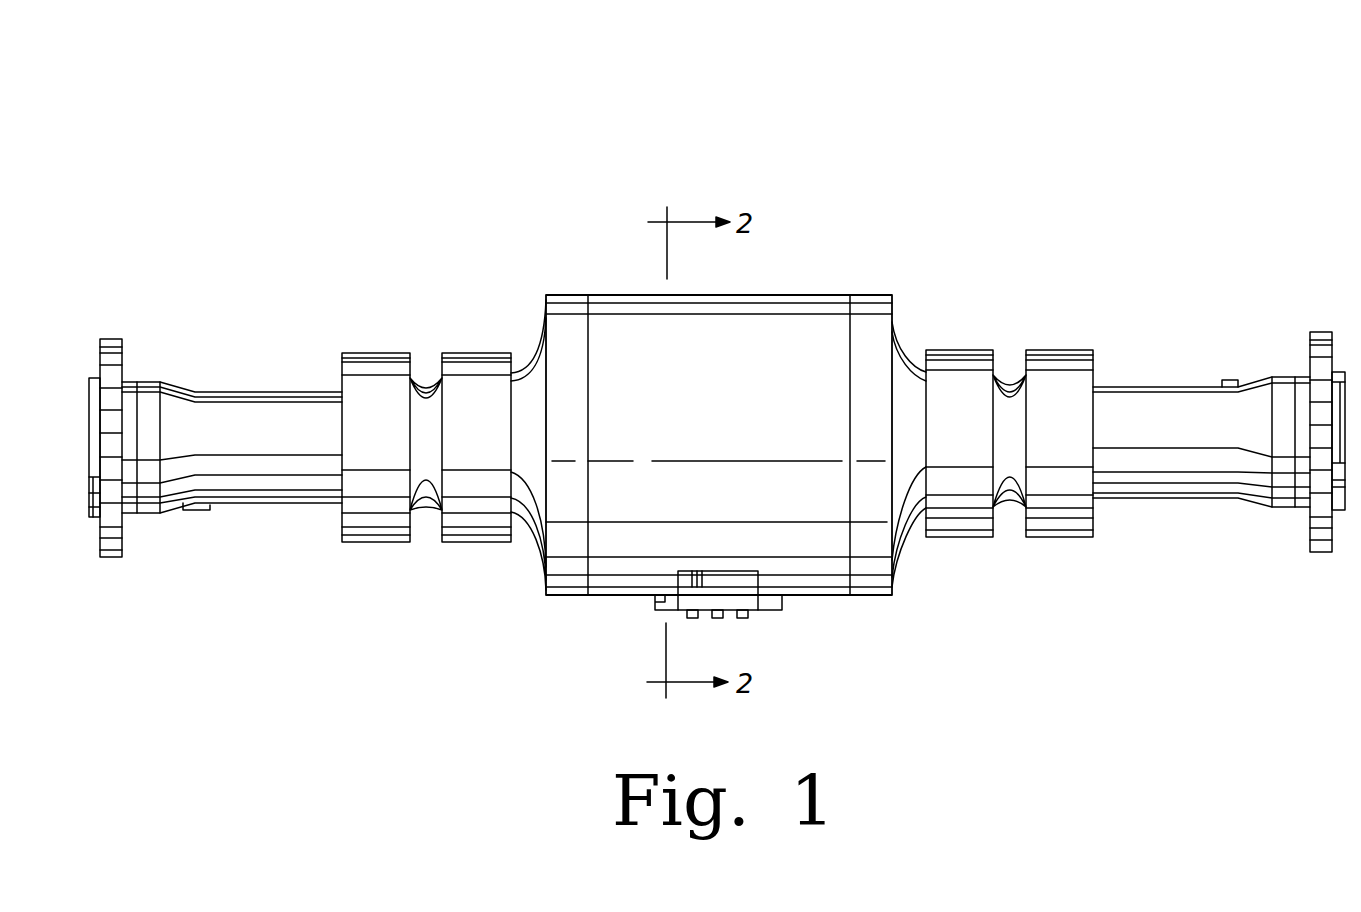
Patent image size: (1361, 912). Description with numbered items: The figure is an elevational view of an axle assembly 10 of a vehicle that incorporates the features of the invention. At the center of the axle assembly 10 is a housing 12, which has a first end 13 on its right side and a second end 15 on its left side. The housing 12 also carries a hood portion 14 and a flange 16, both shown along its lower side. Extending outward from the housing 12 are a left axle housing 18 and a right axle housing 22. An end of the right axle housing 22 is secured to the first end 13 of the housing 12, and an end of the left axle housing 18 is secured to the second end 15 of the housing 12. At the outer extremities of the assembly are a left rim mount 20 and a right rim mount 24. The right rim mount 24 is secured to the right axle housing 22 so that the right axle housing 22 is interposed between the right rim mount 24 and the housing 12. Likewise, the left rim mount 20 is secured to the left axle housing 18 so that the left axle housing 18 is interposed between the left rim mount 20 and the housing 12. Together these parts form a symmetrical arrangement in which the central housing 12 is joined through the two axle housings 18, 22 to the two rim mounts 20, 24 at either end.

The axle assembly 10 is at (1004, 99).
The housing 12 is at (788, 323).
The first end 13 is at (850, 332).
The hood portion 14 is at (740, 587).
The second end 15 is at (588, 543).
The flange 16 is at (655, 602).
The left axle housing 18 is at (252, 483).
The left rim mount 20 is at (110, 557).
The right axle housing 22 is at (1157, 392).
The right rim mount 24 is at (1320, 332).